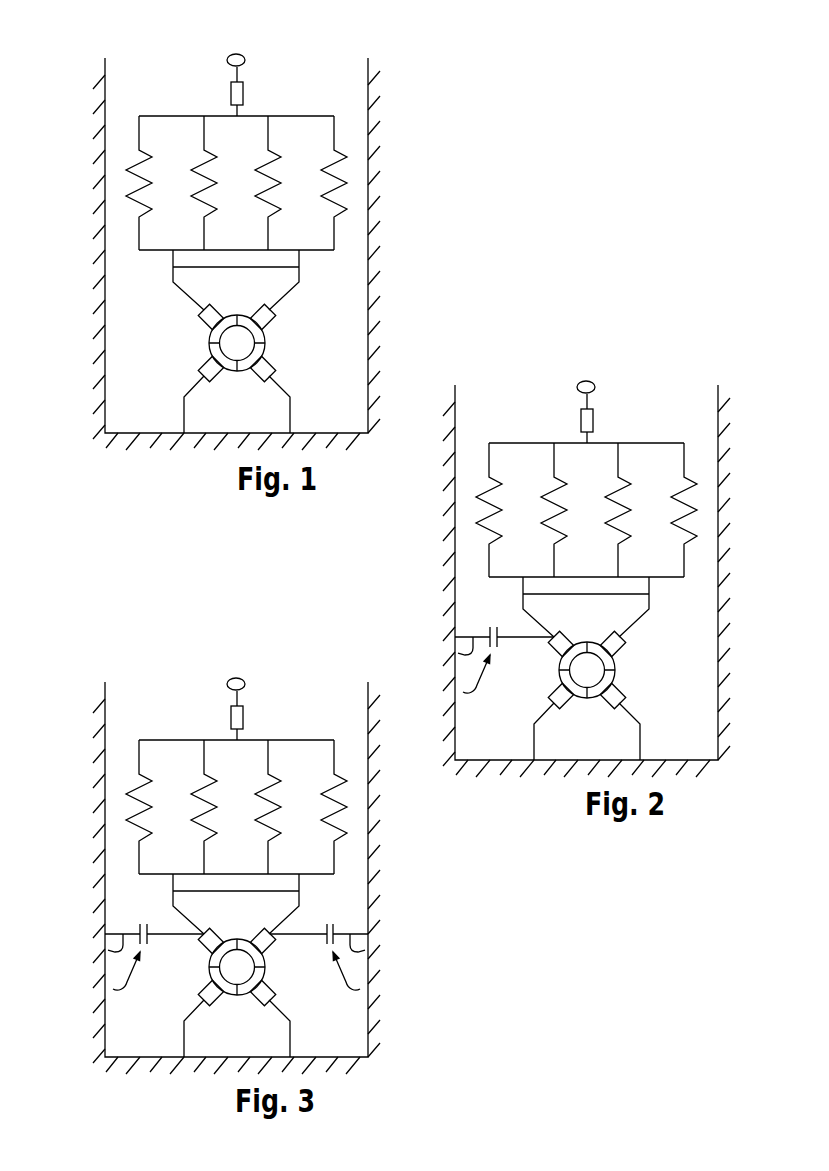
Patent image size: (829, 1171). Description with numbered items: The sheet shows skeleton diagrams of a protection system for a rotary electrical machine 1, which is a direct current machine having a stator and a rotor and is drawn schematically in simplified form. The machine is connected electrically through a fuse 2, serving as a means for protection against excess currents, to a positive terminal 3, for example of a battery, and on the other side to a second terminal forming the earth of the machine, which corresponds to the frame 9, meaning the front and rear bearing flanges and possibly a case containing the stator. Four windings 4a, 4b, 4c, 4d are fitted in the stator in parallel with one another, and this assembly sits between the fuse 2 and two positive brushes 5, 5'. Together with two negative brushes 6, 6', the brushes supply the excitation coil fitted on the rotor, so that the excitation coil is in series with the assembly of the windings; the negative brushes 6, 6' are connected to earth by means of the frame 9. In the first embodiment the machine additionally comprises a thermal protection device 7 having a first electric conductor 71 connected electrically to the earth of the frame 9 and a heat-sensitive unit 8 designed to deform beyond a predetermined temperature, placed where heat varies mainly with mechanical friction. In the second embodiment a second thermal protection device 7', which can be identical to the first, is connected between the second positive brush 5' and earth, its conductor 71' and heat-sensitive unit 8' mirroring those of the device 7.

In FIG. 1, the rotary electrical machine 1 is at (398, 291).
In FIG. 2, the rotary electrical machine 1 is at (519, 601).
In FIG. 3, the rotary electrical machine 1 is at (320, 898).
In FIG. 1, the fuse 2 is at (243, 95).
In FIG. 2, the fuse 2 is at (614, 414).
In FIG. 3, the fuse 2 is at (264, 711).
In FIG. 1, the positive terminal 3 is at (243, 57).
In FIG. 2, the positive terminal 3 is at (612, 369).
In FIG. 3, the positive terminal 3 is at (262, 666).
In FIG. 1, the winding 4a is at (128, 178).
In FIG. 2, the winding 4a is at (455, 510).
In FIG. 3, the winding 4a is at (105, 807).
In FIG. 1, the winding 4b is at (200, 162).
In FIG. 2, the winding 4b is at (532, 496).
In FIG. 3, the winding 4b is at (182, 793).
In FIG. 1, the winding 4c is at (278, 175).
In FIG. 2, the winding 4c is at (636, 495).
In FIG. 3, the winding 4c is at (286, 792).
In FIG. 1, the winding 4d is at (345, 176).
In FIG. 2, the winding 4d is at (724, 510).
In FIG. 3, the winding 4d is at (374, 807).
In FIG. 2, the positive brush 5 is at (542, 661).
In FIG. 3, the positive brush 5 is at (192, 958).
In FIG. 2, the second positive brush 5' is at (643, 639).
In FIG. 3, the second positive brush 5' is at (249, 926).
In FIG. 2, the negative brush 6 is at (575, 716).
In FIG. 3, the negative brush 6 is at (225, 1013).
In FIG. 2, the second negative brush 6' is at (643, 696).
In FIG. 3, the second negative brush 6' is at (290, 993).
In FIG. 2, the thermal protection device 7 is at (453, 674).
In FIG. 3, the thermal protection device 7 is at (103, 971).
In FIG. 3, the second thermal protection device 7' is at (371, 971).
In FIG. 2, the heat-sensitive unit 8 is at (485, 627).
In FIG. 3, the heat-sensitive unit 8 is at (135, 924).
In FIG. 3, the damper 8' is at (341, 924).
In FIG. 1, the frame 9 is at (375, 222).
In FIG. 2, the frame 9 is at (606, 581).
In FIG. 3, the frame 9 is at (257, 878).
In FIG. 2, the first electric conductor 71 is at (437, 647).
In FIG. 3, the first electric conductor 71 is at (87, 944).
In FIG. 3, the damper mount 71' is at (392, 944).